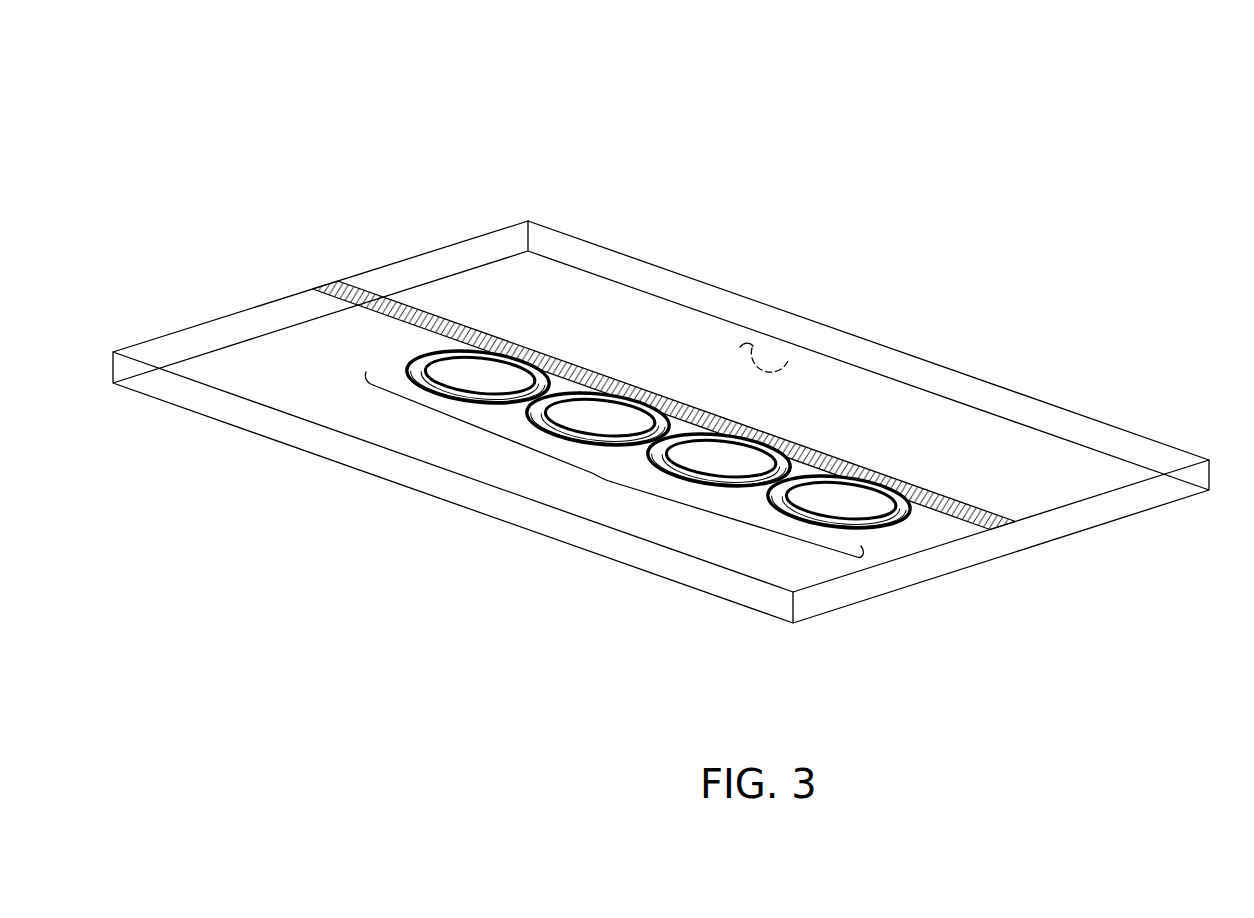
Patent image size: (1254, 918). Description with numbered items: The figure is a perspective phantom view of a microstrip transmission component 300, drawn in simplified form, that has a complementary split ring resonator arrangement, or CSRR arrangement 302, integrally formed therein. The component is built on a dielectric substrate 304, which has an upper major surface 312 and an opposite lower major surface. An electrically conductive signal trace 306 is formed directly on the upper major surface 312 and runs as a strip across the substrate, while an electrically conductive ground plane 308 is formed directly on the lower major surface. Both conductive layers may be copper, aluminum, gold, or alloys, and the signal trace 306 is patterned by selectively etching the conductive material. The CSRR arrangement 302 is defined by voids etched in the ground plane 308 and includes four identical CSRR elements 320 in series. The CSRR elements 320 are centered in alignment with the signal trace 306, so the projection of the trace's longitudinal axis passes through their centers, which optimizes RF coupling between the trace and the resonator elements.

The microstrip transmission component 300 is at (318, 156).
The CSRR arrangement 302 is at (608, 482).
The dielectric substrate 304 is at (181, 343).
The electrically conductive signal trace 306 is at (947, 512).
The electrically conductive ground plane 308 is at (789, 358).
The upper major surface 312 is at (1113, 476).
The CSRR elements 320 is at (398, 366).